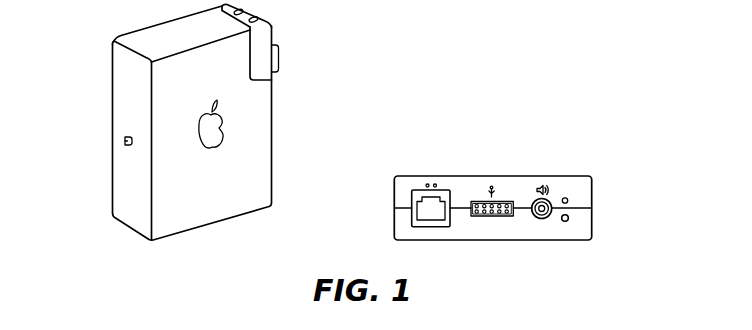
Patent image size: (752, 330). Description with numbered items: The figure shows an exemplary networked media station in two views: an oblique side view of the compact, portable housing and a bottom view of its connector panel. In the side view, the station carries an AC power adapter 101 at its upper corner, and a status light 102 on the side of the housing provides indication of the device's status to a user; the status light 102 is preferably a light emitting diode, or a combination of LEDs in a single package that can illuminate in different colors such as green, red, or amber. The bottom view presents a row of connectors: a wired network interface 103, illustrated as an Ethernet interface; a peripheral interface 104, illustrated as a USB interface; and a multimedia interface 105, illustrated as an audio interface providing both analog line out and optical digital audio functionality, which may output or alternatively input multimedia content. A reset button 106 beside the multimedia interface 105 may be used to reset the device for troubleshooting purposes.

The AC power adapter 101 is at (273, 37).
The status light 102 is at (125, 140).
The wired network interface 103 is at (411, 206).
The peripheral interface 104 is at (480, 200).
The multimedia interface 105 is at (553, 222).
The reset button 106 is at (571, 218).